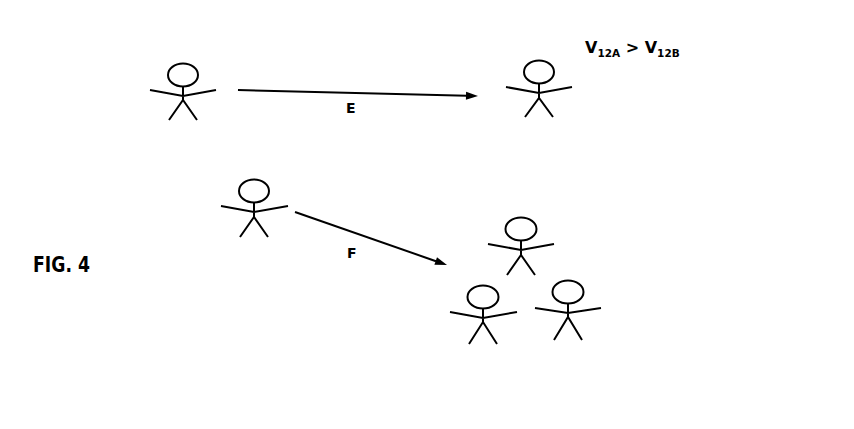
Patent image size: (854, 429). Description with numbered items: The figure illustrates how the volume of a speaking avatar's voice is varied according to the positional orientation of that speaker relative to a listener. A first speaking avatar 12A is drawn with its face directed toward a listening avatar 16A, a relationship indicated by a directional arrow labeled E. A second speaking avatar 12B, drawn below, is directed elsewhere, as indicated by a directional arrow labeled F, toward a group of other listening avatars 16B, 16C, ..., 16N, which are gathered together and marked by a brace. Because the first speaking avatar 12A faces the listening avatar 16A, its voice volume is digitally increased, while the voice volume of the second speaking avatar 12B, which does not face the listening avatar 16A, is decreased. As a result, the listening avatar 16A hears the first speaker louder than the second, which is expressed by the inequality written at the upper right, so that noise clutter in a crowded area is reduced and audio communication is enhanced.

The first speaking avatar 12A is at (130, 90).
The listening avatar 16A is at (496, 72).
The second speaking avatar 12B is at (200, 206).
The other listening avatar 16B is at (604, 283).
The other listening avatar 16C is at (483, 315).
The other listening avatar 16N is at (598, 348).